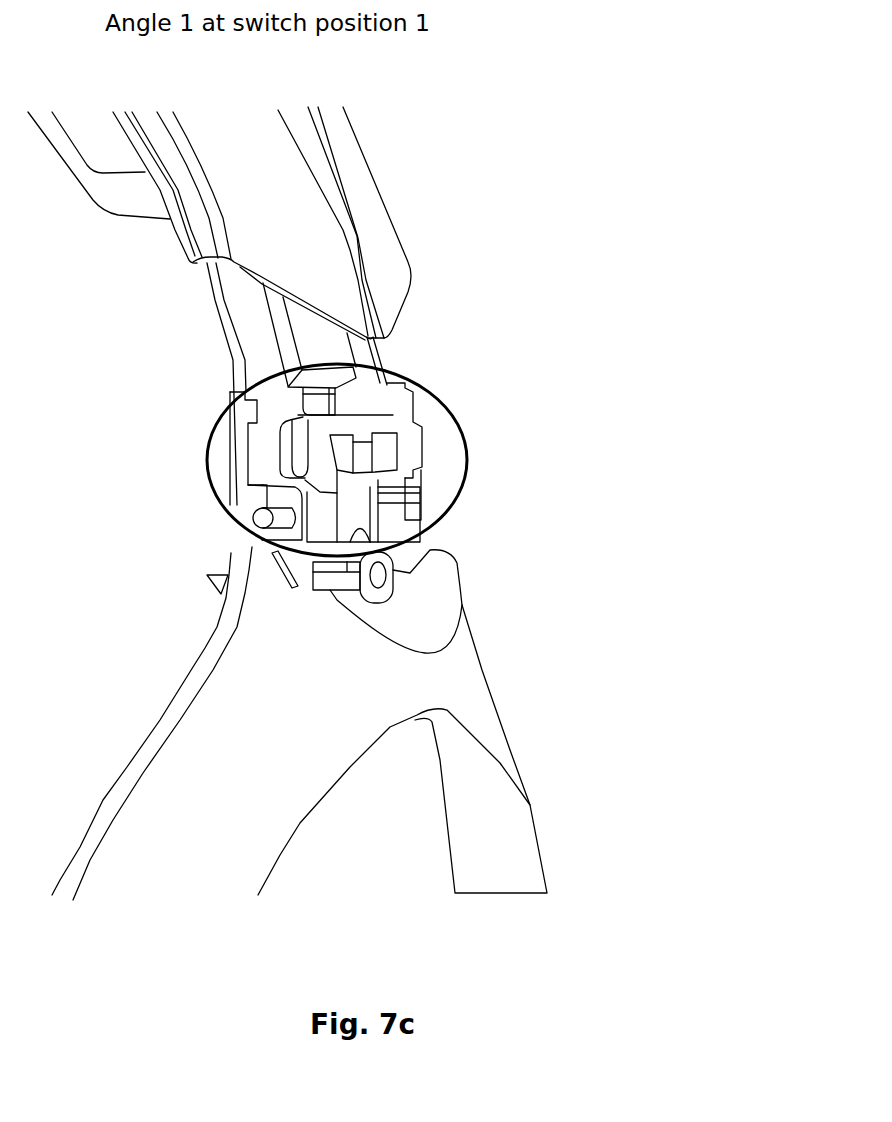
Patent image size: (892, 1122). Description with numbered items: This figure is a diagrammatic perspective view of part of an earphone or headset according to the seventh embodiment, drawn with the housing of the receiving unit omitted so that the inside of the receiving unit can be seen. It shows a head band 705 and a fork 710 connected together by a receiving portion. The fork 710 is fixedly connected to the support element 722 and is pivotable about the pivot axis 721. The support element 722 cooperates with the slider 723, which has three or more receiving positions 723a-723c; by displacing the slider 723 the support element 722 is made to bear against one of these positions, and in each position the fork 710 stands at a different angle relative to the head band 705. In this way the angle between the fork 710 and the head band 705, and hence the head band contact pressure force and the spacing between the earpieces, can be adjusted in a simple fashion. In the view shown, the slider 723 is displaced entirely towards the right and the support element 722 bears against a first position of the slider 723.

The head band 705 is at (363, 183).
The fork 710 is at (518, 753).
The pivot axis 721 is at (253, 518).
The support element 722 is at (387, 472).
The slider 723 is at (430, 433).
The receiving positions 723a-723c is at (427, 450).